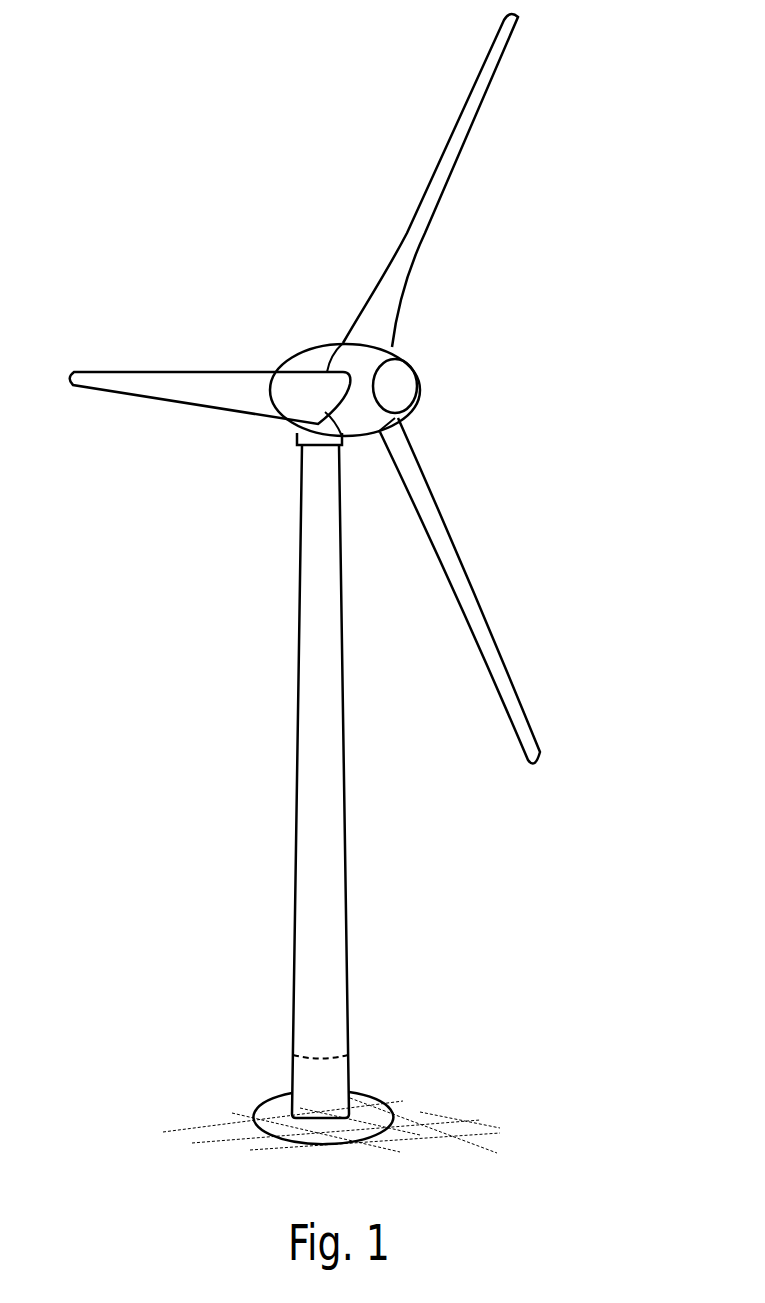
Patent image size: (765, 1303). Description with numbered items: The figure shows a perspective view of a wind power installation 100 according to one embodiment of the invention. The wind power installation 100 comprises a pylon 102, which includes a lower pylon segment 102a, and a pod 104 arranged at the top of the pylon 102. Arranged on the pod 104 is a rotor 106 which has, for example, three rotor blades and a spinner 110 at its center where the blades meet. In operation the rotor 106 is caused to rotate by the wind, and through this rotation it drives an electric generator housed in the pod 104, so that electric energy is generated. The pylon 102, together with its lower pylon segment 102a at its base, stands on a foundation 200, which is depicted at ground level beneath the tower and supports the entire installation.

The wind power installation 100 is at (237, 513).
The pylon 102 is at (333, 875).
The lower pylon segment 102a is at (350, 1063).
The pod 104 is at (303, 363).
The rotor 106 is at (523, 265).
The spinner 110 is at (405, 383).
The foundation 200 is at (283, 1128).